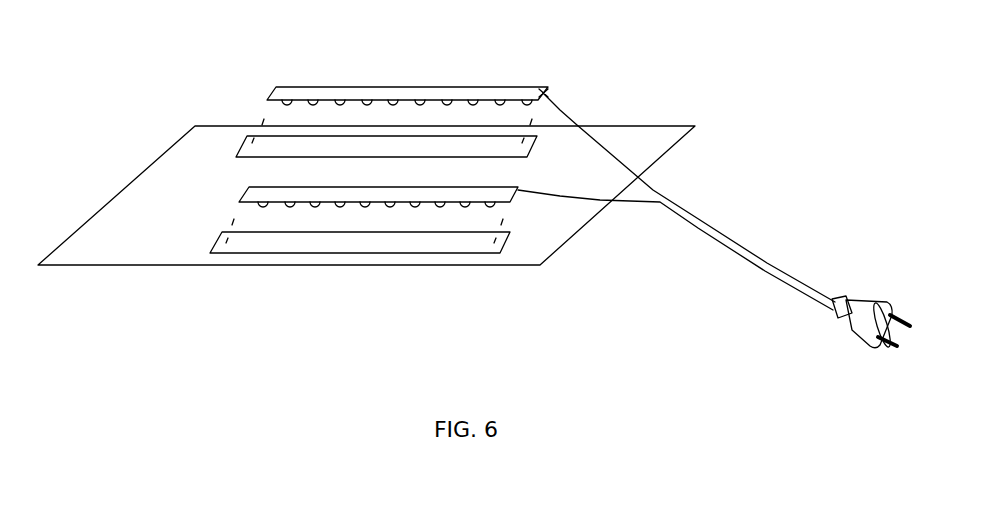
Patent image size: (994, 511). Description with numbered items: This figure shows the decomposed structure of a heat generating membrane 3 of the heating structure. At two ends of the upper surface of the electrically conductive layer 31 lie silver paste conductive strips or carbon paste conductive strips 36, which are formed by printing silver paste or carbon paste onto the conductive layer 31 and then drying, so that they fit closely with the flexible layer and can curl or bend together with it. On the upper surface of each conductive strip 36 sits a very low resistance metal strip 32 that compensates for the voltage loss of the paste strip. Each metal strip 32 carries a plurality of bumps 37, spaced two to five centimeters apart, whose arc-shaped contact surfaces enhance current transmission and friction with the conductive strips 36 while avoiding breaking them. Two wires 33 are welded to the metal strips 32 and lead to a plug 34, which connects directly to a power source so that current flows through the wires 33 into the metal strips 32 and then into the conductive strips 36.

The heating assembly 3 is at (180, 86).
The electrically conductive layer 31 is at (102, 215).
The metal strip 32 is at (383, 92).
The wire 33 is at (560, 110).
The plug 34 is at (857, 322).
The silver paste conductive strip or carbon paste conductive strip 36 is at (425, 147).
The bump 37 is at (315, 105).